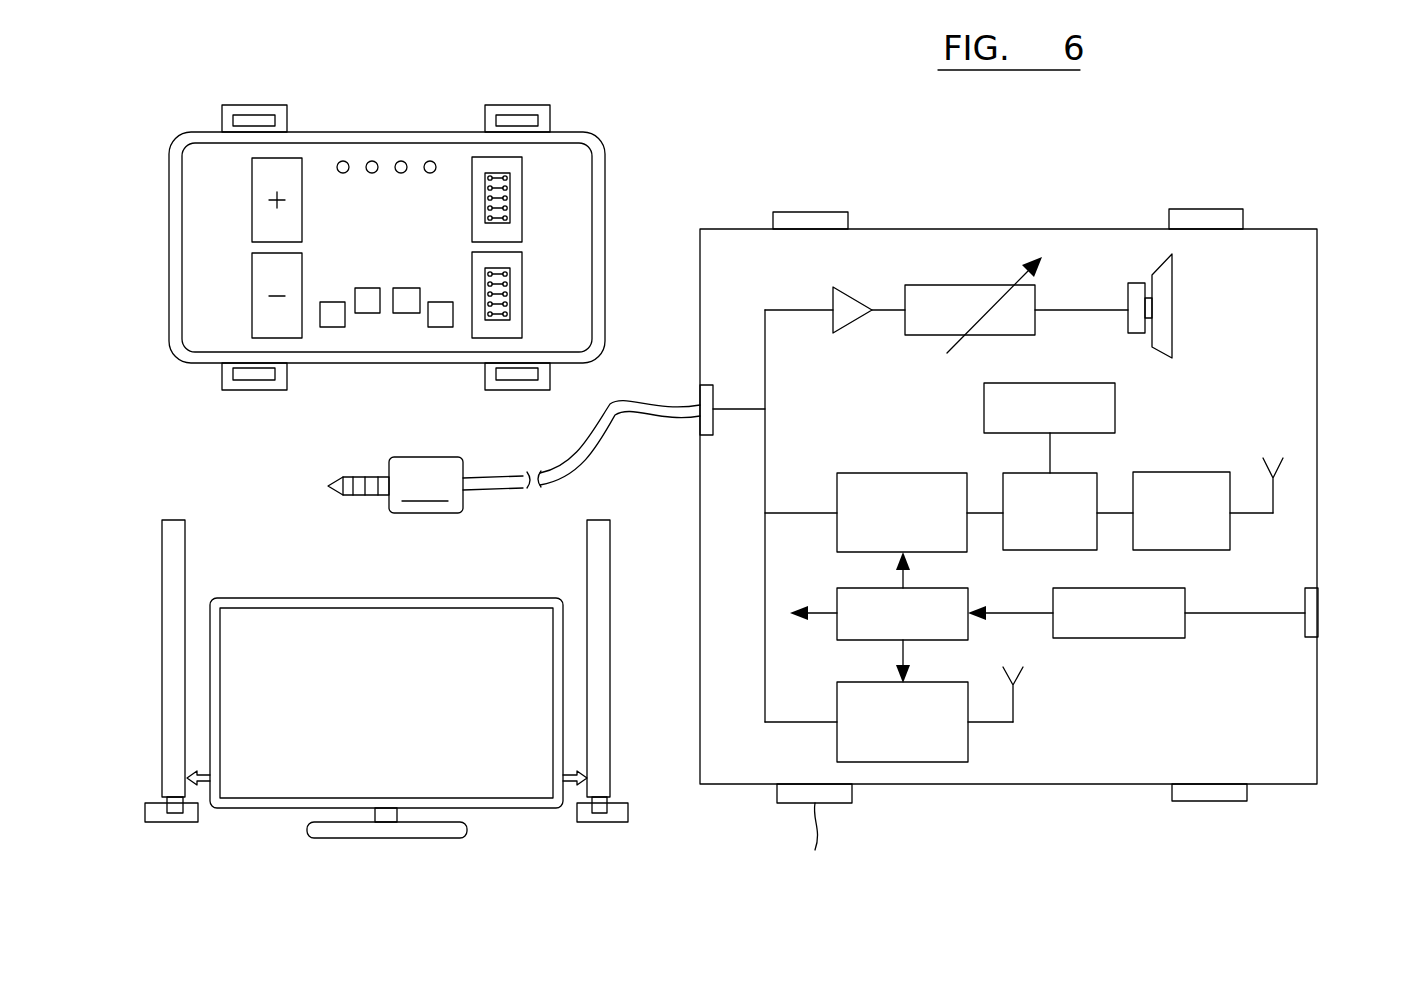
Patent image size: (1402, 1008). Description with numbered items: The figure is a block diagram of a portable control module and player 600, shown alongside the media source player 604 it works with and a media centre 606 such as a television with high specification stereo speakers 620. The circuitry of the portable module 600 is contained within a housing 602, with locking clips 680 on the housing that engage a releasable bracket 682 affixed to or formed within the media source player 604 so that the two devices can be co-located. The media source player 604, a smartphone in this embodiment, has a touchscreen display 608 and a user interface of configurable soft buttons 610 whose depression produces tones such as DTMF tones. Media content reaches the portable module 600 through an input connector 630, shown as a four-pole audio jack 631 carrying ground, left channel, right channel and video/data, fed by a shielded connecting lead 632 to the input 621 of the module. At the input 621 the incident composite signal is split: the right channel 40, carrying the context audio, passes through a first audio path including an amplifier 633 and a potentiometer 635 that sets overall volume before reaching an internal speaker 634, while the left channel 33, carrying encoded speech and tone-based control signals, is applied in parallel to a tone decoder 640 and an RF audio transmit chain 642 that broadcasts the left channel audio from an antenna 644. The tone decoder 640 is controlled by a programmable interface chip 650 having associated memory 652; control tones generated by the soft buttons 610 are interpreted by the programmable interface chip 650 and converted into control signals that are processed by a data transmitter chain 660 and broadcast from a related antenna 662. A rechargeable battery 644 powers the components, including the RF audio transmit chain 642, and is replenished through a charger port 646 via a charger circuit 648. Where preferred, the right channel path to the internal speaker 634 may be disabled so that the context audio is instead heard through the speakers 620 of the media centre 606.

The left channel 33 is at (763, 338).
The right channel 40 is at (766, 612).
The portable control module and player 600 is at (1073, 228).
The housing 602 is at (1085, 784).
The media source player 604 is at (606, 182).
The media centre 606 is at (510, 780).
The touchscreen display 608 is at (440, 327).
The soft buttons 610 is at (262, 202).
The speakers 620 is at (175, 552).
The input 621 is at (705, 423).
The input connector 630 is at (544, 457).
The four-pole audio jack 631 is at (362, 495).
The connecting lead 632 is at (835, 614).
The amplifier 633 is at (853, 295).
The speaker 634 is at (1173, 303).
The potentiometer 635 is at (968, 285).
The tone decoder 640 is at (900, 473).
The RF audio transmit chain 642 is at (907, 762).
The antenna 644 is at (868, 640).
The charger port 646 is at (1318, 613).
The charger circuit 648 is at (1130, 638).
The programmable interface chip 650 is at (1052, 550).
The memory 652 is at (1115, 408).
The data transmitter chain 660 is at (1198, 550).
The antenna 662 is at (1270, 492).
The locking clips 680 is at (808, 212).
The releasable bracket 682 is at (248, 118).